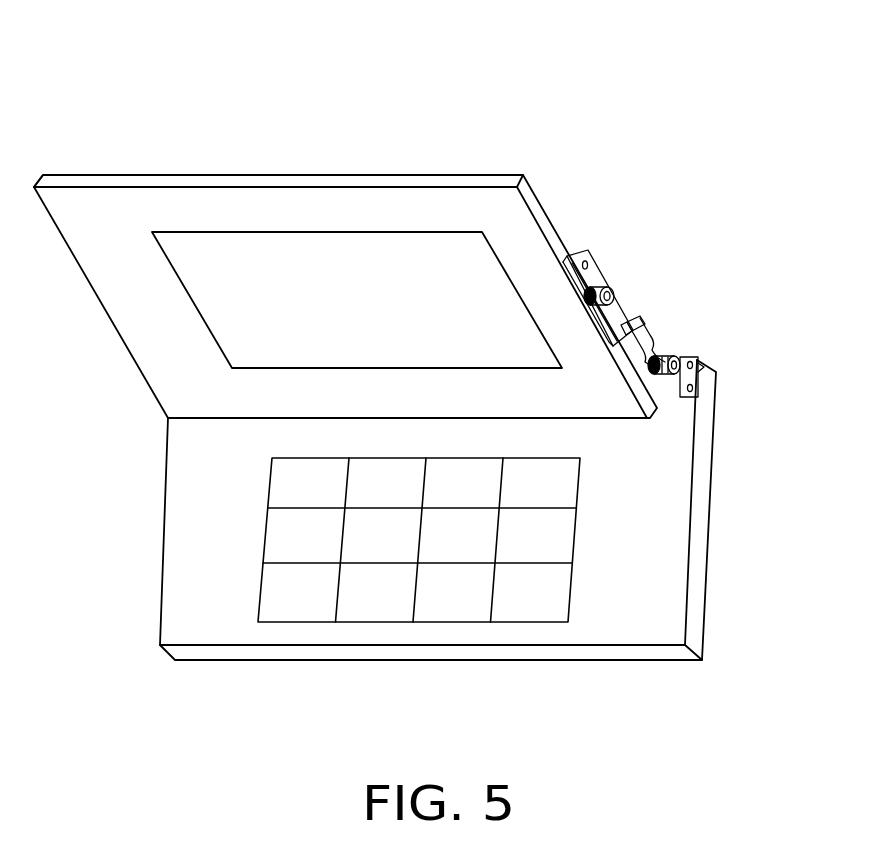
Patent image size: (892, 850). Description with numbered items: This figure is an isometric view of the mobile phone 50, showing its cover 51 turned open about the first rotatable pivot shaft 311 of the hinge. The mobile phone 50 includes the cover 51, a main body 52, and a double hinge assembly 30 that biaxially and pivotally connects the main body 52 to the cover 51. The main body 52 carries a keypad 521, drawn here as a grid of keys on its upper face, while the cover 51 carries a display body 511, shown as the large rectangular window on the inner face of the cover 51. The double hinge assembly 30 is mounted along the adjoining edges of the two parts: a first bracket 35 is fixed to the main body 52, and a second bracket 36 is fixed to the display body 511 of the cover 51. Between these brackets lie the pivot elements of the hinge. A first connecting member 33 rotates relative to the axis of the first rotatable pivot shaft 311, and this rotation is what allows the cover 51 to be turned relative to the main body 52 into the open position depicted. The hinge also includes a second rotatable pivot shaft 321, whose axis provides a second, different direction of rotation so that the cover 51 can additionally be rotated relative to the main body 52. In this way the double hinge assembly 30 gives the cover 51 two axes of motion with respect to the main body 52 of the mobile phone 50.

The mobile phone 50 is at (668, 46).
The cover 51 is at (300, 196).
The display body 511 is at (448, 267).
The main body 52 is at (660, 495).
The keypad 521 is at (557, 592).
The double hinge assembly 30 is at (693, 248).
The second bracket 36 is at (578, 257).
The second rotatable pivot shaft 321 is at (614, 294).
The first connecting member 33 is at (641, 327).
The first rotatable pivot shaft 311 is at (675, 357).
The first bracket 35 is at (692, 374).